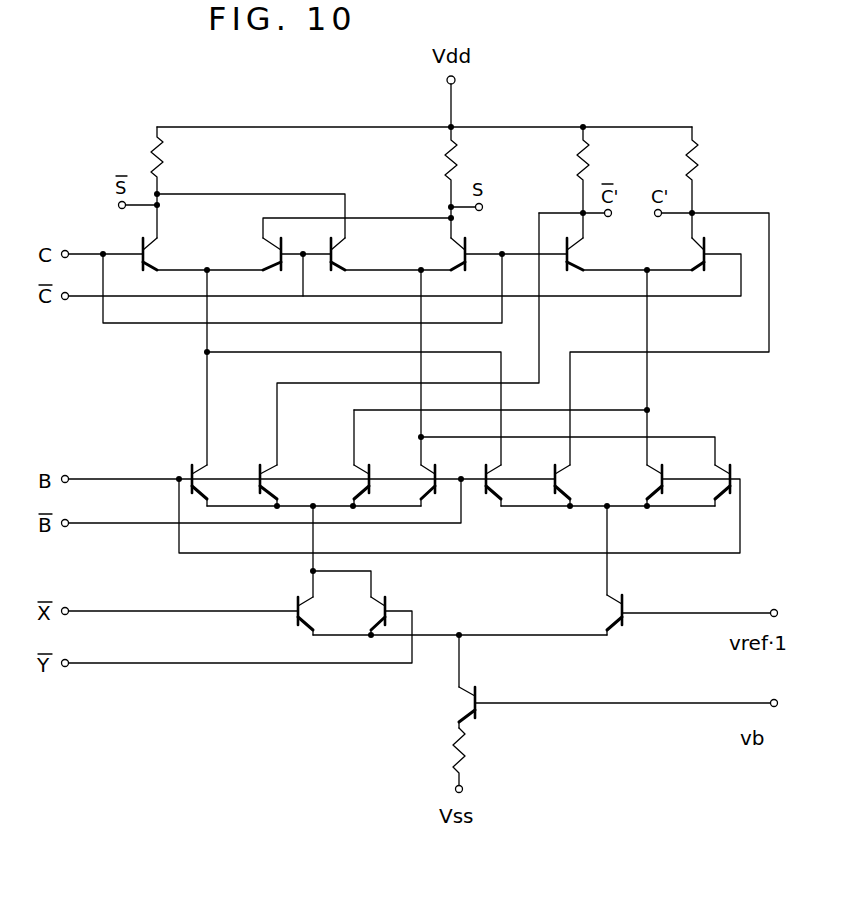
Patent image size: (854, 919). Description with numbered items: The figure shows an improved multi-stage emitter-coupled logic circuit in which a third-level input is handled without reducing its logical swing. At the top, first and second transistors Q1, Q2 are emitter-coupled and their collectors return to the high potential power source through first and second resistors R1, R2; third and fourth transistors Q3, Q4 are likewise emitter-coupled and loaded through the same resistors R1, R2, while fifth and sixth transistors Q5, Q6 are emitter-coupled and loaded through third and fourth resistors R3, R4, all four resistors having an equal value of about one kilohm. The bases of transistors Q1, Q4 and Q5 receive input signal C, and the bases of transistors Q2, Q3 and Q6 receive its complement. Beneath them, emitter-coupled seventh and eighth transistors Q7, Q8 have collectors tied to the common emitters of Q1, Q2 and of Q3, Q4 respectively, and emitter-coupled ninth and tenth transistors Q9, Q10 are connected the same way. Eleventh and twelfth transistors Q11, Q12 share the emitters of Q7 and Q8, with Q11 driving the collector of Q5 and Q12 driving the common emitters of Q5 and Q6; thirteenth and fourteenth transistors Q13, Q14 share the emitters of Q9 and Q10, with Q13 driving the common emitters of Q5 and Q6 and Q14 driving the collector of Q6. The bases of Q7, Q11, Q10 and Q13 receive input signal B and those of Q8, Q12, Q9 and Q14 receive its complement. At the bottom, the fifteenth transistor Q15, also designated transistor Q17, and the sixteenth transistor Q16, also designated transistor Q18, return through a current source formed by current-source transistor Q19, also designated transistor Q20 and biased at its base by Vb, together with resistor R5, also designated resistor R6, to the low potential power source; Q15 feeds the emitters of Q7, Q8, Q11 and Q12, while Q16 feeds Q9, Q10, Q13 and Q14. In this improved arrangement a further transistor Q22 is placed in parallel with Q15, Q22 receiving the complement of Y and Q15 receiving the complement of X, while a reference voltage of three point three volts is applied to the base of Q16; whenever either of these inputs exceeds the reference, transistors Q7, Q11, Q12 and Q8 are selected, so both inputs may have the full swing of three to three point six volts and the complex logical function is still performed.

The first resistor R1 is at (163, 158).
The second resistor R2 is at (444, 158).
The third resistor R3 is at (578, 158).
The fourth resistor R4 is at (684, 158).
The resistor R5 is at (417, 756).
The resistor R6 is at (452, 757).
The first transistor Q1 is at (156, 247).
The second transistor Q2 is at (268, 253).
The third transistor Q3 is at (344, 248).
The fourth transistor Q4 is at (452, 254).
The fifth transistor Q5 is at (580, 248).
The sixth transistor Q6 is at (692, 254).
The seventh transistor Q7 is at (184, 463).
The eighth transistor Q8 is at (408, 463).
The ninth transistor Q9 is at (500, 472).
The tenth transistor Q10 is at (728, 458).
The eleventh transistor Q11 is at (252, 463).
The twelfth transistor Q12 is at (342, 463).
The thirteenth transistor Q13 is at (666, 470).
The fourteenth transistor Q14 is at (566, 472).
The fifteenth transistor Q15 is at (263, 602).
The sixteenth transistor Q16 is at (568, 603).
The fifteenth transistor Q17 is at (288, 597).
The sixteenth transistor Q18 is at (600, 599).
The transistor Q19 is at (419, 707).
The transistor Q20 is at (460, 705).
The transistor Q22 is at (392, 594).